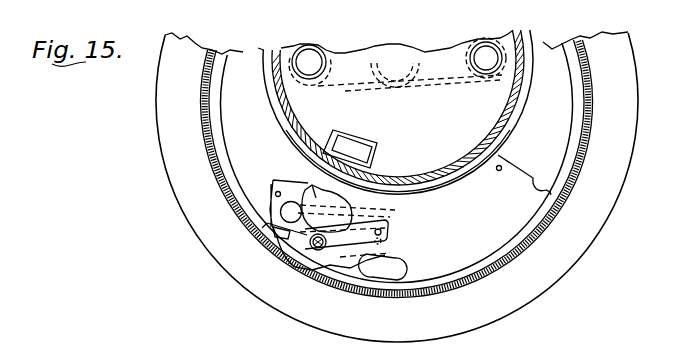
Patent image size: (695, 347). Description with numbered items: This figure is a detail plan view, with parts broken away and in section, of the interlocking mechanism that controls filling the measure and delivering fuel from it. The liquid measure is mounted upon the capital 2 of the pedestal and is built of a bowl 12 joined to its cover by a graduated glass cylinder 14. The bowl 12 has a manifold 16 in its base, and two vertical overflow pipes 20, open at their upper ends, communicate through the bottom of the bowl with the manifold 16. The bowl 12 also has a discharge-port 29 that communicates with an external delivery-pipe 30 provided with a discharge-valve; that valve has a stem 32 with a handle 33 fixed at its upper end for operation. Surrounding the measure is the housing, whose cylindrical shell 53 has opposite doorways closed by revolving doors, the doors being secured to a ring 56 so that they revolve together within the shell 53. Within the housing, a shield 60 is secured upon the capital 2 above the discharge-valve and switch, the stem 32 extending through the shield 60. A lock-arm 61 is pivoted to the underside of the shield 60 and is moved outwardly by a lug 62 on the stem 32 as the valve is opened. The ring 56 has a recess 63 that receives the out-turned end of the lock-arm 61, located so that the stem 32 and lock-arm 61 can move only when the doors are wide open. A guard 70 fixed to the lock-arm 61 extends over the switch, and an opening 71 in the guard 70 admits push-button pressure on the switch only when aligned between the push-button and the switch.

The capital 2 is at (603, 220).
The bowl 12 is at (505, 138).
The glass cylinder 14 is at (512, 107).
The manifold 16 is at (439, 87).
The overflow pipes 20 is at (481, 78).
The discharge-port 29 is at (377, 143).
The delivery-pipe 30 is at (310, 187).
The stem 32 is at (270, 205).
The handle 33 is at (402, 266).
The cylindrical shell 53 is at (592, 110).
The ring 56 is at (224, 128).
The shield 60 is at (525, 178).
The lock-arm 61 is at (292, 247).
The lug 62 is at (268, 228).
The recess 63 is at (277, 232).
The guard 70 is at (392, 240).
The opening 71 is at (385, 230).